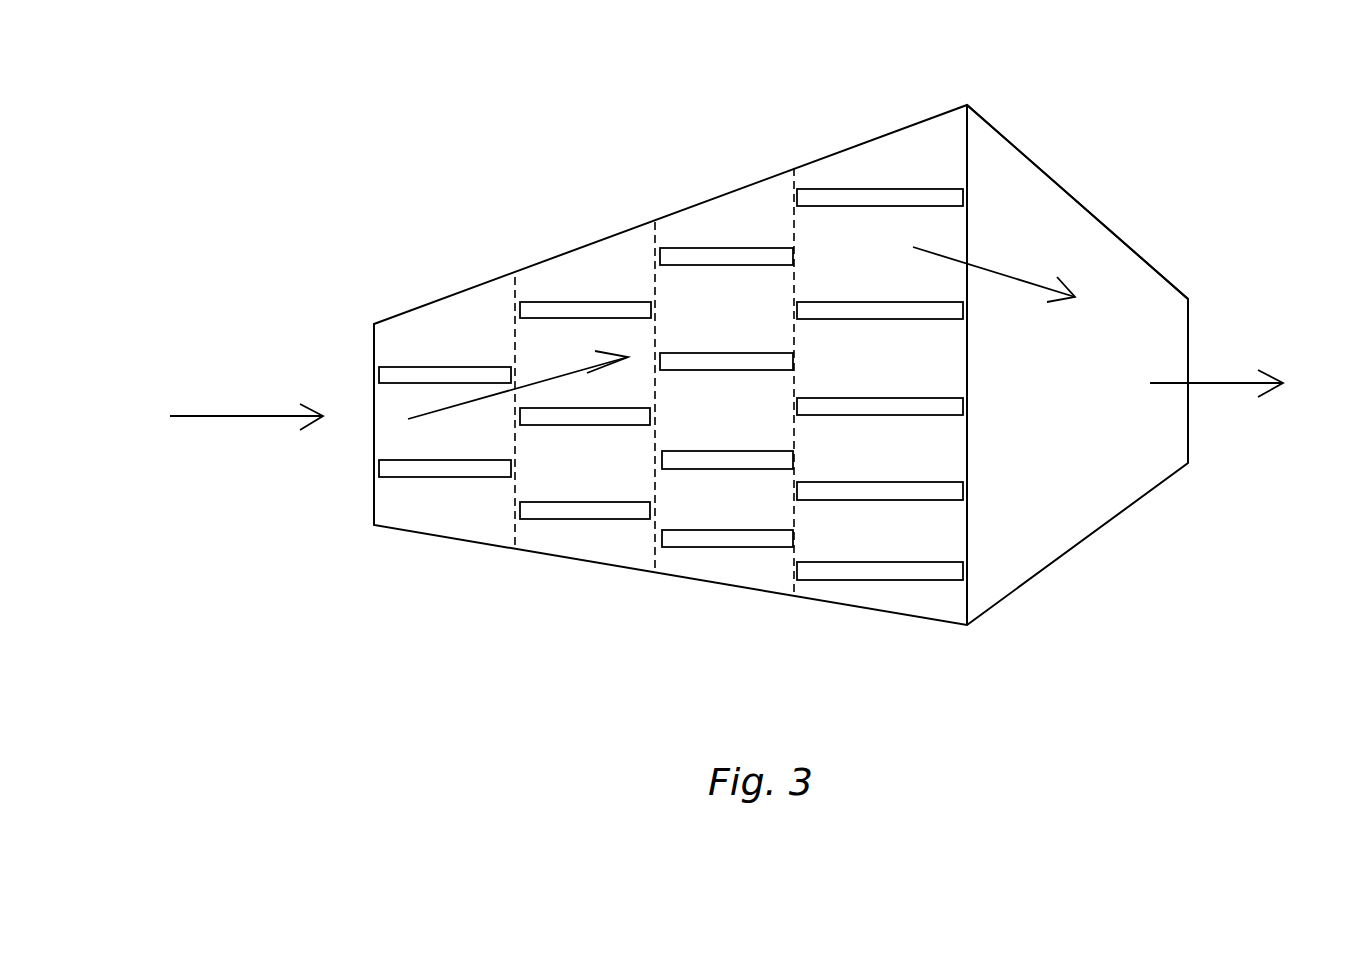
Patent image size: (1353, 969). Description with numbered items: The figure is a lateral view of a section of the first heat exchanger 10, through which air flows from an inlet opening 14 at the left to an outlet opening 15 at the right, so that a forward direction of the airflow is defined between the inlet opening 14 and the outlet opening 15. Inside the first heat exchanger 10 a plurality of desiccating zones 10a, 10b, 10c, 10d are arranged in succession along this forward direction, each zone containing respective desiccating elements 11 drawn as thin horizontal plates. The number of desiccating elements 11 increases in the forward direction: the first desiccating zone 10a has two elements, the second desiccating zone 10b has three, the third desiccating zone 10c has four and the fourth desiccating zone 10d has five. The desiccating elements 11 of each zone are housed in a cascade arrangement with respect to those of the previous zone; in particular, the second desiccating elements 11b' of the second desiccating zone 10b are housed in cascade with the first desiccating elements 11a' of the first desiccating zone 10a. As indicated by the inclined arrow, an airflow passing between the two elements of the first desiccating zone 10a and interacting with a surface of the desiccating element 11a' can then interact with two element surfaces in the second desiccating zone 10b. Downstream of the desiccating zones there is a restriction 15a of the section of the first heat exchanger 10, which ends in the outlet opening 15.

The first heat exchanger 10 is at (1004, 125).
The first desiccating zone 10a is at (512, 255).
The second desiccating zone 10b is at (648, 208).
The third desiccating zone 10c is at (788, 153).
The fourth desiccating zone 10d is at (963, 100).
The desiccating element 11 is at (399, 360).
The first desiccating element 11a' is at (445, 354).
The second desiccating element 11b' is at (585, 292).
The inlet opening 14 is at (373, 397).
The outlet opening 15 is at (1190, 335).
The restriction 15a is at (1097, 215).